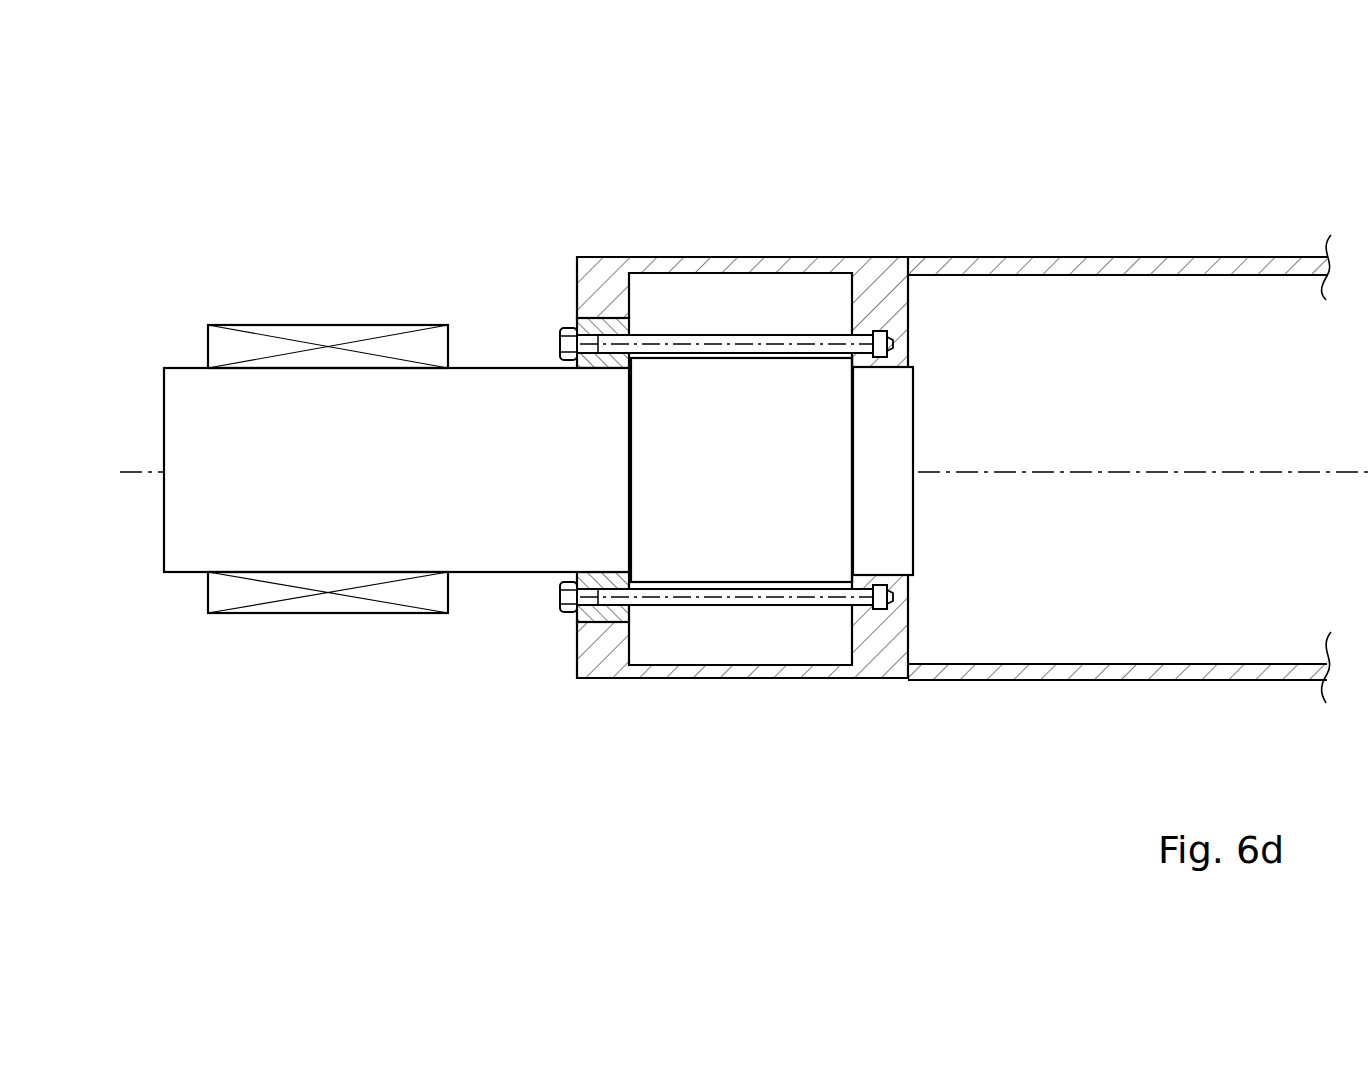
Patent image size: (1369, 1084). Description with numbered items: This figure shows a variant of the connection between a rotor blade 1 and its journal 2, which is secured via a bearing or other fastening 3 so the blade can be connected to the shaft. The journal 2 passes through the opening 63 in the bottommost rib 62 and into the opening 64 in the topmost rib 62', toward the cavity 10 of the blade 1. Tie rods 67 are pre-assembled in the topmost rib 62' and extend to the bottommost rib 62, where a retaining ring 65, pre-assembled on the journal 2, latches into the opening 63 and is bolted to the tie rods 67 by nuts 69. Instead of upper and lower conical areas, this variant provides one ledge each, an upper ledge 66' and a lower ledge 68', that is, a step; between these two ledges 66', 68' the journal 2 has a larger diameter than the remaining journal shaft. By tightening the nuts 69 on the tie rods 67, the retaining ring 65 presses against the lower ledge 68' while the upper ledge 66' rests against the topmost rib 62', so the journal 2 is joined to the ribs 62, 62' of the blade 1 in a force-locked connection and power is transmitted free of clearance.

The rotor blade 1 is at (1108, 263).
The journal 2 is at (412, 540).
The bearing or other fastening 3 is at (332, 345).
The cavity 10 is at (1213, 570).
The bottommost rib 62 is at (742, 712).
The topmost rib 62' is at (925, 714).
The opening in the bottommost rib 63 is at (593, 313).
The opening in the topmost rib 64 is at (883, 367).
The retaining ring 65 is at (583, 613).
The upper ledge 66' is at (883, 613).
The tie rods 67 is at (723, 338).
The lower ledge 68' is at (741, 615).
The nuts 69 is at (557, 337).